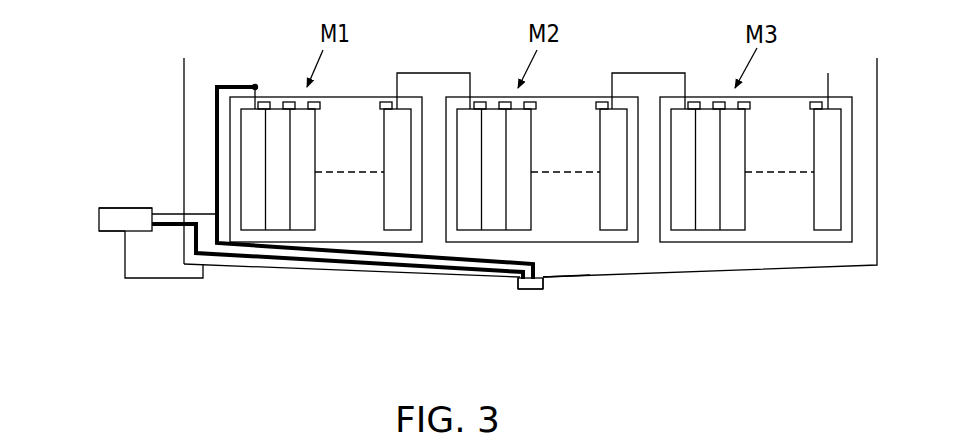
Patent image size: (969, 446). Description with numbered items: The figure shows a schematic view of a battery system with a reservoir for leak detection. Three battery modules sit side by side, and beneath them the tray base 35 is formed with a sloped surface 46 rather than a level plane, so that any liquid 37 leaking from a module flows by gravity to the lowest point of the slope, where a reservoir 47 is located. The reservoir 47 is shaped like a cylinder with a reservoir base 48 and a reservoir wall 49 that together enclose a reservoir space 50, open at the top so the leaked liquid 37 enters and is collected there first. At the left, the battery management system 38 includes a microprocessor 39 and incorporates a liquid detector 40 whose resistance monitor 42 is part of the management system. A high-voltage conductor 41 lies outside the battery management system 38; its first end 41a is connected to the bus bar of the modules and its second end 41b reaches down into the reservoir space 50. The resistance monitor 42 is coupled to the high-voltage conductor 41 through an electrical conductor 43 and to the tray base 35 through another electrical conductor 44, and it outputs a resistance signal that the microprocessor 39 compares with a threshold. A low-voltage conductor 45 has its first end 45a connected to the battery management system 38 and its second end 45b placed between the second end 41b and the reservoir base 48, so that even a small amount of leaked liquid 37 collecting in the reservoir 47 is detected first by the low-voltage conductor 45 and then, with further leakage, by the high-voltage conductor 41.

The tray base 35 is at (687, 272).
The liquid 37 is at (532, 291).
The battery management system 38 is at (113, 207).
The microprocessor 39 is at (99, 211).
The liquid detector 40 is at (163, 168).
The high-voltage conductor 41 is at (217, 98).
The first end of the high-voltage conductor 41a is at (250, 85).
The second end of the high-voltage conductor 41b is at (546, 283).
The resistance monitor 42 is at (110, 231).
The electrical conductor 43 is at (197, 212).
The electrical conductor 44 is at (120, 265).
The low-voltage conductor 45 is at (240, 258).
The first end of the low-voltage conductor 45a is at (162, 236).
The second end of the low-voltage conductor 45b is at (517, 280).
The sloped surface 46 is at (343, 272).
The reservoir 47 is at (513, 293).
The reservoir base 48 is at (545, 291).
The reservoir wall 49 is at (552, 291).
The reservoir space 50 is at (560, 273).